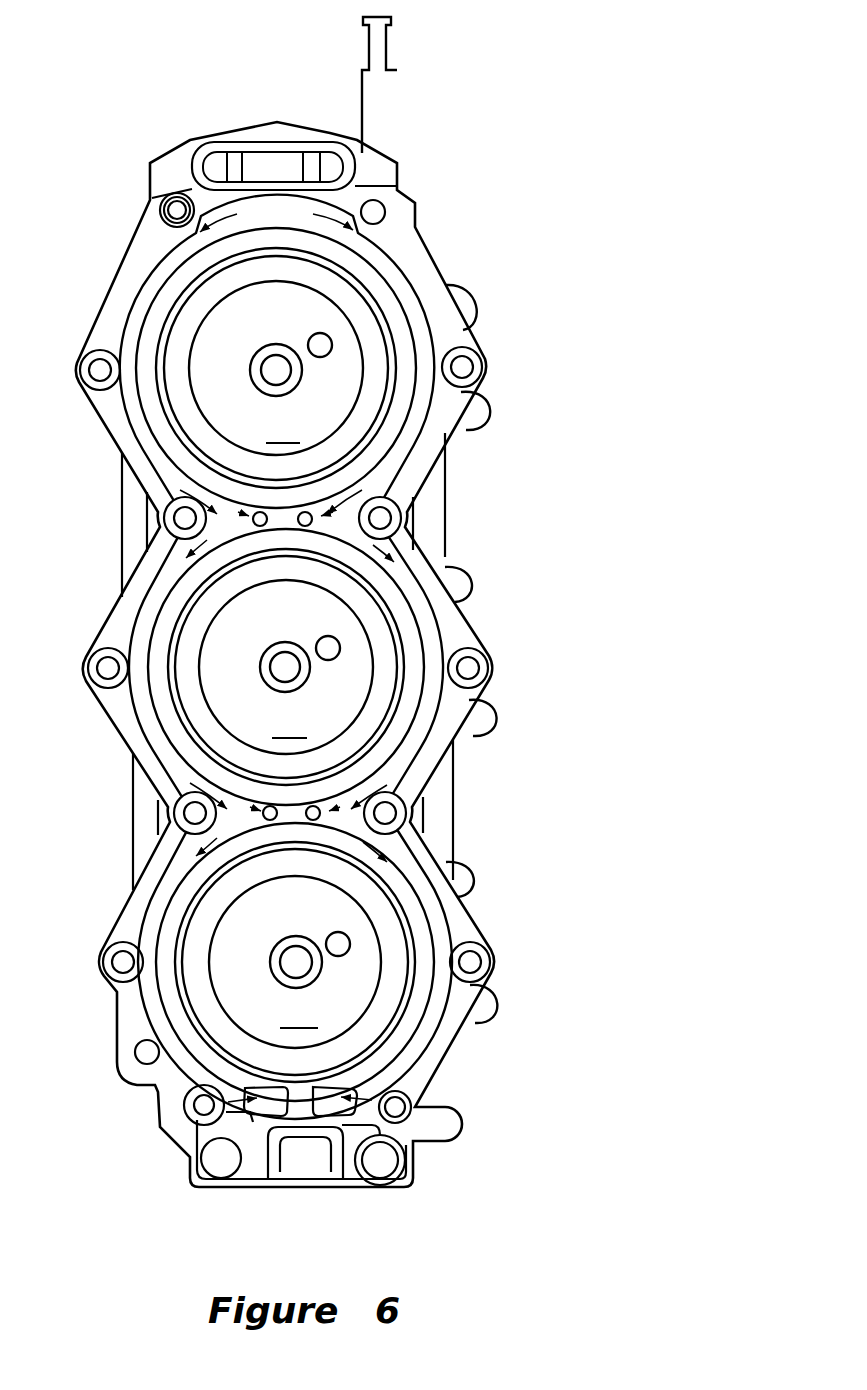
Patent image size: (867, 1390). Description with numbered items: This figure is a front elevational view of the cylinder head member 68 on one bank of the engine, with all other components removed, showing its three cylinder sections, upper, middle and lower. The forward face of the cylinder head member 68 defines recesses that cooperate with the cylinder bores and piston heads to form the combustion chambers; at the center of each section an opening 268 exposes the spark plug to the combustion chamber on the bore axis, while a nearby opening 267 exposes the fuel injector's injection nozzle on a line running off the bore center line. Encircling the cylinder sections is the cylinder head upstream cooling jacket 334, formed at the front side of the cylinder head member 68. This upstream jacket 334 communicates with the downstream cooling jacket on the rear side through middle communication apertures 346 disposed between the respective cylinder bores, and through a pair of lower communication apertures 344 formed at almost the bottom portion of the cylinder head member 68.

The cylinder head member 68 is at (426, 175).
The cylinder head upstream cooling jacket 334 is at (408, 283).
The opening 268 is at (283, 372).
The opening 267 is at (322, 346).
The middle communication apertures 346 is at (303, 527).
The lower communication apertures 344 is at (333, 1102).